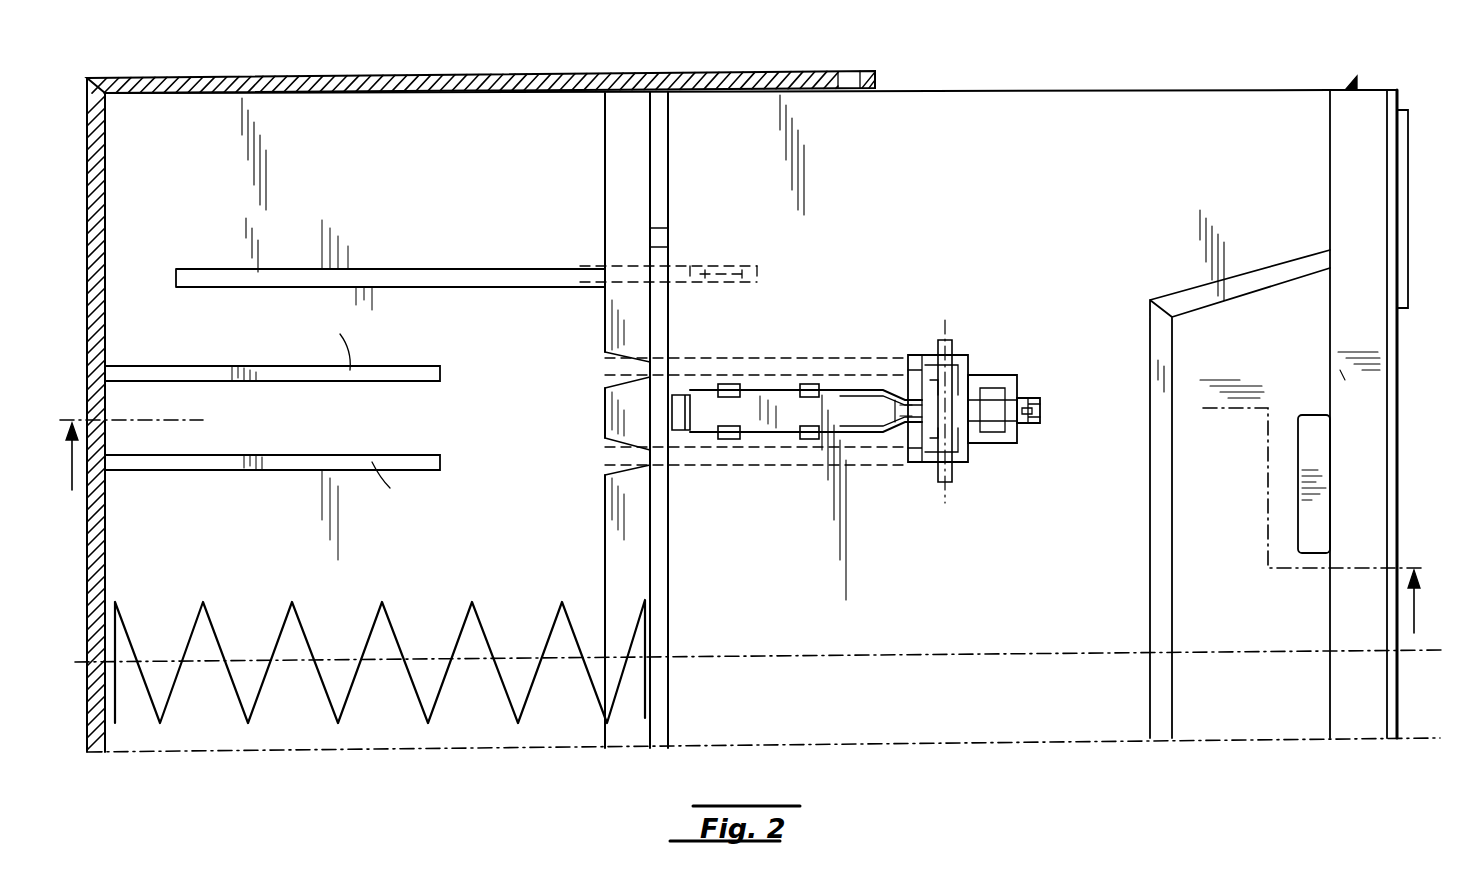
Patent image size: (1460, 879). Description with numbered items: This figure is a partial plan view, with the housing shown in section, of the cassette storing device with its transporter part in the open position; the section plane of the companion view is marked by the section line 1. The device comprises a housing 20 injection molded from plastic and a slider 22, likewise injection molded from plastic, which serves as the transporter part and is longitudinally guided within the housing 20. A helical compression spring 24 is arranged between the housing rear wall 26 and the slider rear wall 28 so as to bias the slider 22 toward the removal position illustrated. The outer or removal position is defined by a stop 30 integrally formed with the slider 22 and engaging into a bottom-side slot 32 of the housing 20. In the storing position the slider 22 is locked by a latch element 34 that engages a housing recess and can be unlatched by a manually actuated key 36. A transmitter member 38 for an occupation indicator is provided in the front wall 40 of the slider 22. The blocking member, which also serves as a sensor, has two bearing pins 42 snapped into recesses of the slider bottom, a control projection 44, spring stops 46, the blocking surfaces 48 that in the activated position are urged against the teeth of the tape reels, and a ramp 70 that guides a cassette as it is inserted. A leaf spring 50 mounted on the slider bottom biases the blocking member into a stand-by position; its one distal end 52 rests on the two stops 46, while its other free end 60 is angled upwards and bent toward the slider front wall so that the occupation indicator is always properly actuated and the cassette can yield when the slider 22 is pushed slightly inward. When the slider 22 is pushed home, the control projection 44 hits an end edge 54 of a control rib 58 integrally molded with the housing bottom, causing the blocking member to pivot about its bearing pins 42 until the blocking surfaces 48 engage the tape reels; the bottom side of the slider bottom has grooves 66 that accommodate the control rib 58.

The section line 1 is at (742, 509).
The housing 20 is at (528, 73).
The slider 22 is at (1052, 88).
The helical compression spring 24 is at (386, 604).
The housing rear wall 26 is at (98, 232).
The slider rear wall 28 is at (656, 170).
The stop 30 is at (728, 272).
The bottom-side slot 32 is at (484, 270).
The latch element 34 is at (1350, 86).
The key 36 is at (1403, 114).
The transmitter member 38 is at (1318, 432).
The front wall 40 is at (1362, 110).
The bearing pins 42 is at (950, 348).
The control projection 44 is at (914, 352).
The spring stops 46 is at (988, 374).
The blocking surfaces 48 is at (1000, 394).
The leaf spring 50 is at (787, 392).
The end of leaf spring 52 is at (905, 442).
The end edge 54 is at (452, 462).
The control rib 58 is at (363, 435).
The free end of leaf spring 60 is at (690, 400).
The grooves 66 is at (862, 360).
The ramp 70 is at (1040, 410).